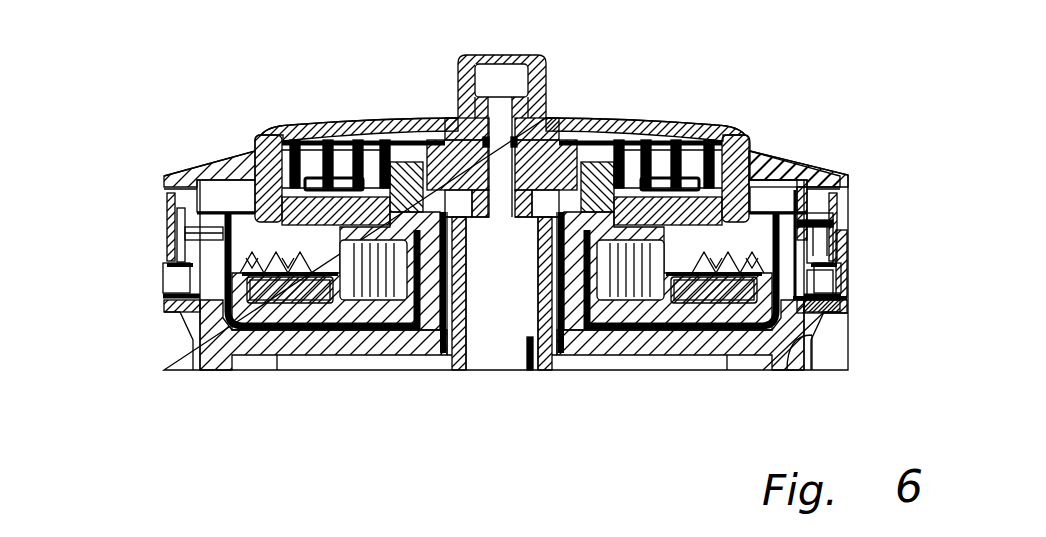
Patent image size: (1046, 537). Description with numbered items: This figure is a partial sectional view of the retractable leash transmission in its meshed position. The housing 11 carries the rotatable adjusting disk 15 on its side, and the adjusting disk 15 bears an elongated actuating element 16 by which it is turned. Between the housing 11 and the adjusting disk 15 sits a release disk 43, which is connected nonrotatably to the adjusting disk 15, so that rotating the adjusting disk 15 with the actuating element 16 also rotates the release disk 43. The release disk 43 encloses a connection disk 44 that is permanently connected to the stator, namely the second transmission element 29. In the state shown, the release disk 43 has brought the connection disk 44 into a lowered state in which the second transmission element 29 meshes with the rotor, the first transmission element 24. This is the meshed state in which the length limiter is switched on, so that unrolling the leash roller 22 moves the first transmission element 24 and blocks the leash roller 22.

The housing 11 is at (163, 175).
The adjusting disk 15 is at (712, 135).
The actuating element 16 is at (546, 66).
The leash roller 22 is at (813, 327).
The first transmission element 24 is at (258, 294).
The second transmission element 29 is at (163, 242).
The release disk 43 is at (378, 135).
The connection disk 44 is at (275, 140).